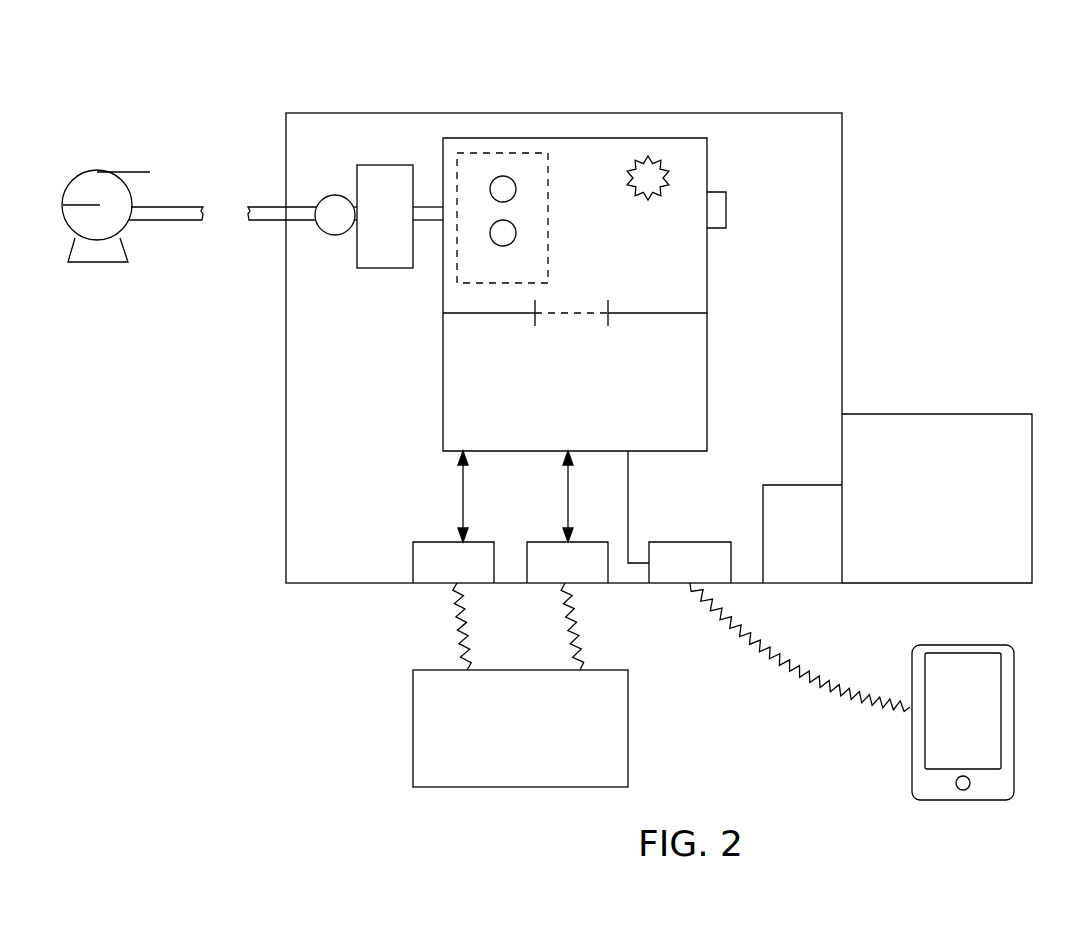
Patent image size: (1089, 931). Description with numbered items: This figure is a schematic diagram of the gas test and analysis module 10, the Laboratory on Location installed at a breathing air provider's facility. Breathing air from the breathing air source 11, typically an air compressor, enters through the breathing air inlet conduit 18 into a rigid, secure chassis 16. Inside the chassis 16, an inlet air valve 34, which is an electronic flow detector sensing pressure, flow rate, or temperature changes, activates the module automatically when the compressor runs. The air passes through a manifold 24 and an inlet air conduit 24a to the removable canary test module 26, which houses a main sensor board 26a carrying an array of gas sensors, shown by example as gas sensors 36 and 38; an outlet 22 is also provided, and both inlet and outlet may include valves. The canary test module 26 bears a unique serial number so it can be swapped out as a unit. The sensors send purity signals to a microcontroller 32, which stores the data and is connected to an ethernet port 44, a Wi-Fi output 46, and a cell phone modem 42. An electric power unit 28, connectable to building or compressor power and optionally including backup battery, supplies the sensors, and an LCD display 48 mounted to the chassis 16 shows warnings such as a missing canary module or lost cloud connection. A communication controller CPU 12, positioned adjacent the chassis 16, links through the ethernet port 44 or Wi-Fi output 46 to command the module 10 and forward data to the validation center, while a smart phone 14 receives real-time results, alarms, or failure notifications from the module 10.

The gas test and analysis module 10 is at (730, 97).
The breathing air source 11 is at (97, 170).
The communication controller CPU 12 is at (628, 733).
The smart phone 14 is at (1014, 712).
The chassis 16 is at (833, 313).
The breathing air inlet conduit 18 is at (173, 213).
The outlet 22 is at (718, 212).
The manifold 24 is at (385, 260).
The inlet air conduit 24a is at (432, 203).
The canary test module 26 is at (635, 248).
The main sensor board 26a is at (652, 160).
The electric power unit 28 is at (803, 497).
The microcontroller 32 is at (588, 409).
The inlet air valve 34 is at (337, 234).
The gas sensor 36 is at (507, 190).
The gas sensor 38 is at (497, 232).
The cell phone modem 42 is at (693, 550).
The ethernet port 44 is at (433, 550).
The Wi-Fi output 46 is at (545, 550).
The LCD display 48 is at (944, 508).